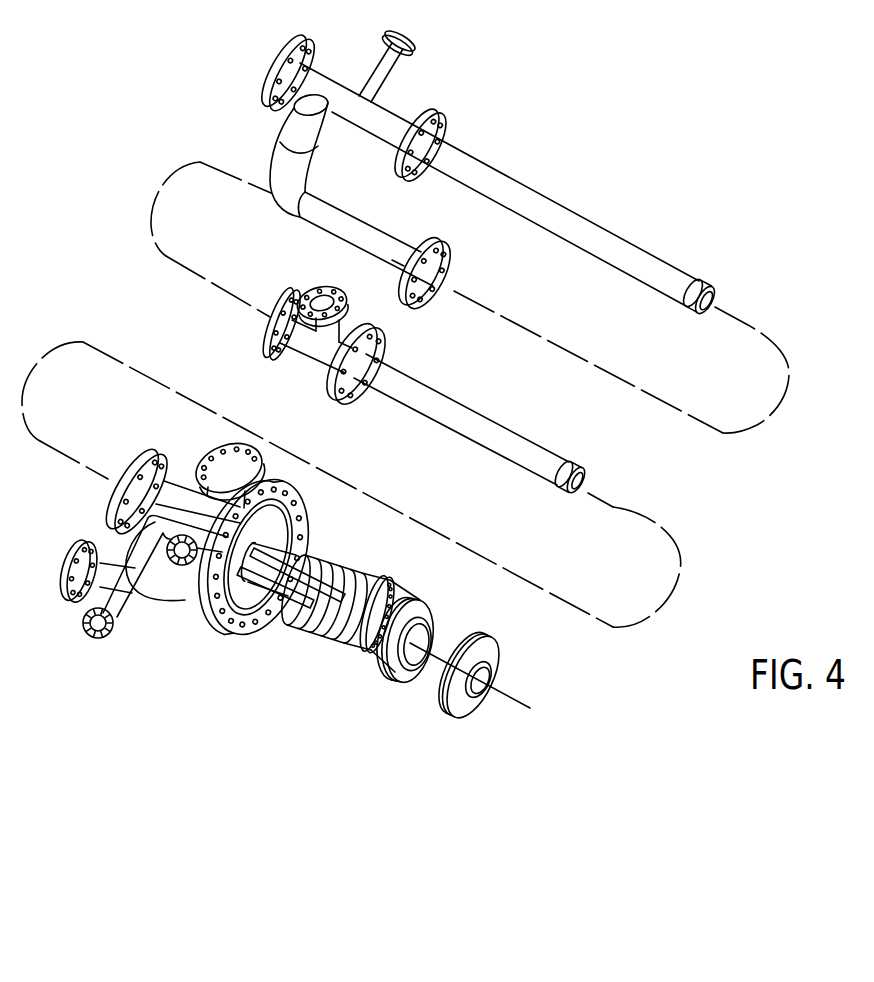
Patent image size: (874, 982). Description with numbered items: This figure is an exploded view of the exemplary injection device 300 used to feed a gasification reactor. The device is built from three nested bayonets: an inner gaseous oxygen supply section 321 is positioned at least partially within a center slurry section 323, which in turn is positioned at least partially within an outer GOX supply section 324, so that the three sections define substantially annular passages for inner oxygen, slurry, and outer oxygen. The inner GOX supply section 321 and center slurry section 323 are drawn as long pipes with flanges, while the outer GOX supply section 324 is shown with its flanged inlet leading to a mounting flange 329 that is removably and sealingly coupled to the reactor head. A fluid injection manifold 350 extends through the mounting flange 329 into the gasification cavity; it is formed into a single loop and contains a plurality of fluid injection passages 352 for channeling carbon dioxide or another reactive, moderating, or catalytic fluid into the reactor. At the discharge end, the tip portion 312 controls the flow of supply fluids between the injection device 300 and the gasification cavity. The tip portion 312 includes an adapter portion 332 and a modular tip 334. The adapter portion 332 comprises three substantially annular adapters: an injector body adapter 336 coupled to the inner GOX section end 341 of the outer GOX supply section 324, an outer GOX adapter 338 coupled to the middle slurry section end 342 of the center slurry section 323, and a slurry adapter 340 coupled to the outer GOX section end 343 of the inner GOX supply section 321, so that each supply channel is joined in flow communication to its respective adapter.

The injection device 300 is at (230, 114).
The inner gaseous oxygen supply section 321 is at (555, 197).
The slurry adapter 340 is at (708, 283).
The outer GOX section end 343 is at (665, 312).
The center slurry section 323 is at (470, 437).
The middle slurry section end 342 is at (571, 441).
The outer GOX adapter 338 is at (585, 473).
The outer GOX supply section 324 is at (173, 492).
The mounting flange 329 is at (297, 487).
The fluid injection manifold 350 is at (100, 645).
The inner GOX section end 341 is at (389, 565).
The fluid injection passages 352 is at (320, 651).
The injector body adapter 336 is at (350, 664).
The adapter portion 332 is at (380, 686).
The modular tip 334 is at (493, 677).
The tip portion 312 is at (466, 614).